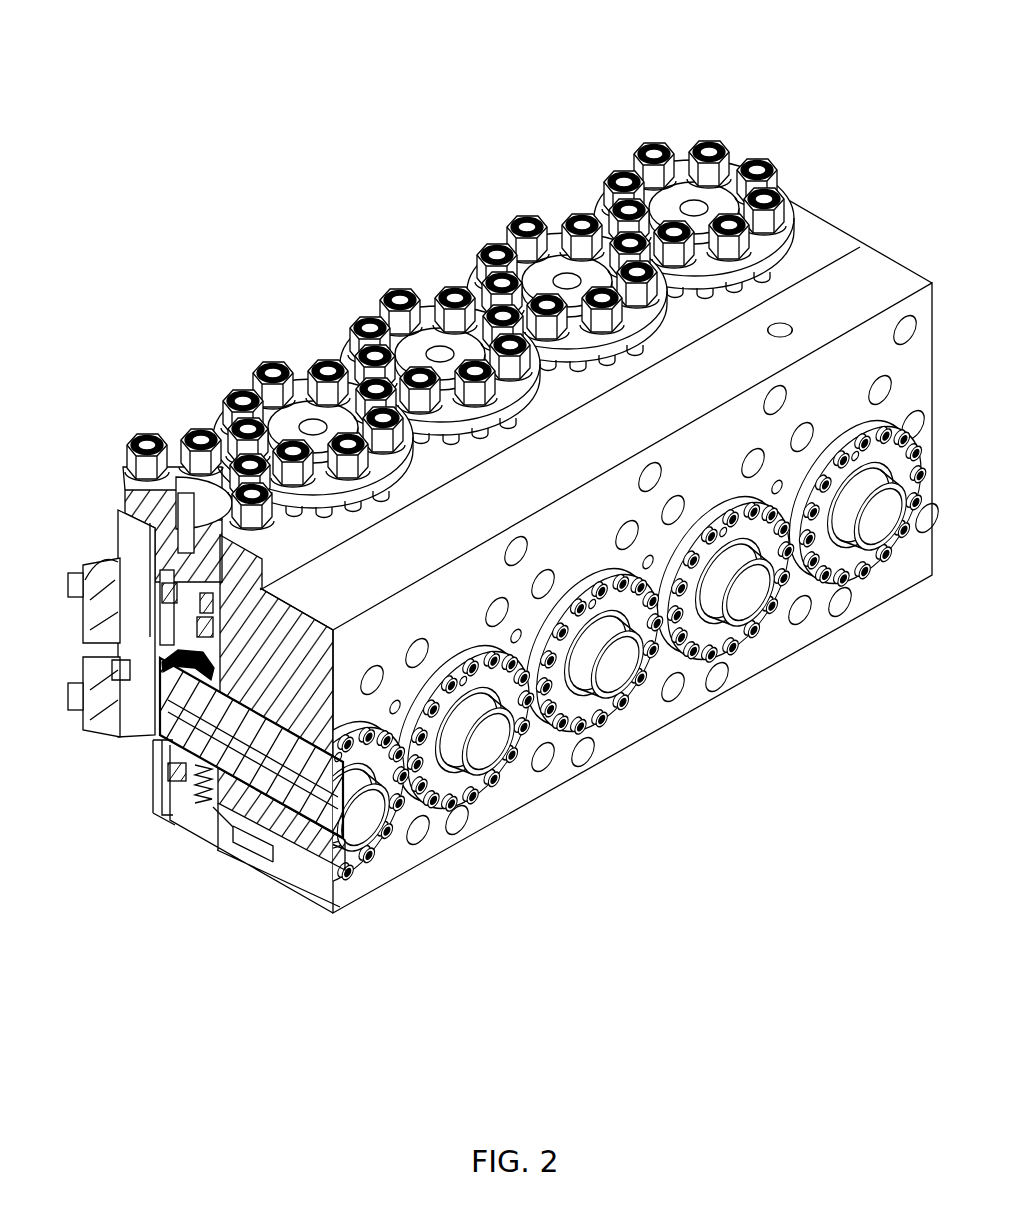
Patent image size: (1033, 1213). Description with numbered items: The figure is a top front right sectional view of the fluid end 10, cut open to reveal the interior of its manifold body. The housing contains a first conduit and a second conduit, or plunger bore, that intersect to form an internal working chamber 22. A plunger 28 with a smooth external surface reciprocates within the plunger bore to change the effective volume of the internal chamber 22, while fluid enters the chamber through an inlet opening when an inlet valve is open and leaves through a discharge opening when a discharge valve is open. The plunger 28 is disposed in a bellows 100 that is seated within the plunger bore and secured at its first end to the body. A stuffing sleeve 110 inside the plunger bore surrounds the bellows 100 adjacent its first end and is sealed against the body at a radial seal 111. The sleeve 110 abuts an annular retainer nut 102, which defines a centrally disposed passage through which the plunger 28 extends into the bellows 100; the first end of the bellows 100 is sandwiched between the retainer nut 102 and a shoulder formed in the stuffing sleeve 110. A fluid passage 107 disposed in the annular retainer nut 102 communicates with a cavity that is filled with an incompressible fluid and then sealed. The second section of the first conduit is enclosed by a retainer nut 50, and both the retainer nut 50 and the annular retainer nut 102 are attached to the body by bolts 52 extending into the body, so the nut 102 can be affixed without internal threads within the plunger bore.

The fluid end 10 is at (251, 88).
The bolts 52 is at (368, 323).
The radial seal 111 is at (253, 683).
The retainer nut 50 is at (100, 582).
The internal working chamber 22 is at (150, 703).
The bellows 100 is at (207, 845).
The stuffing sleeve 110 is at (300, 826).
The plunger 28 is at (378, 813).
The fluid passage 107 is at (420, 734).
The annular retainer nut 102 is at (333, 721).